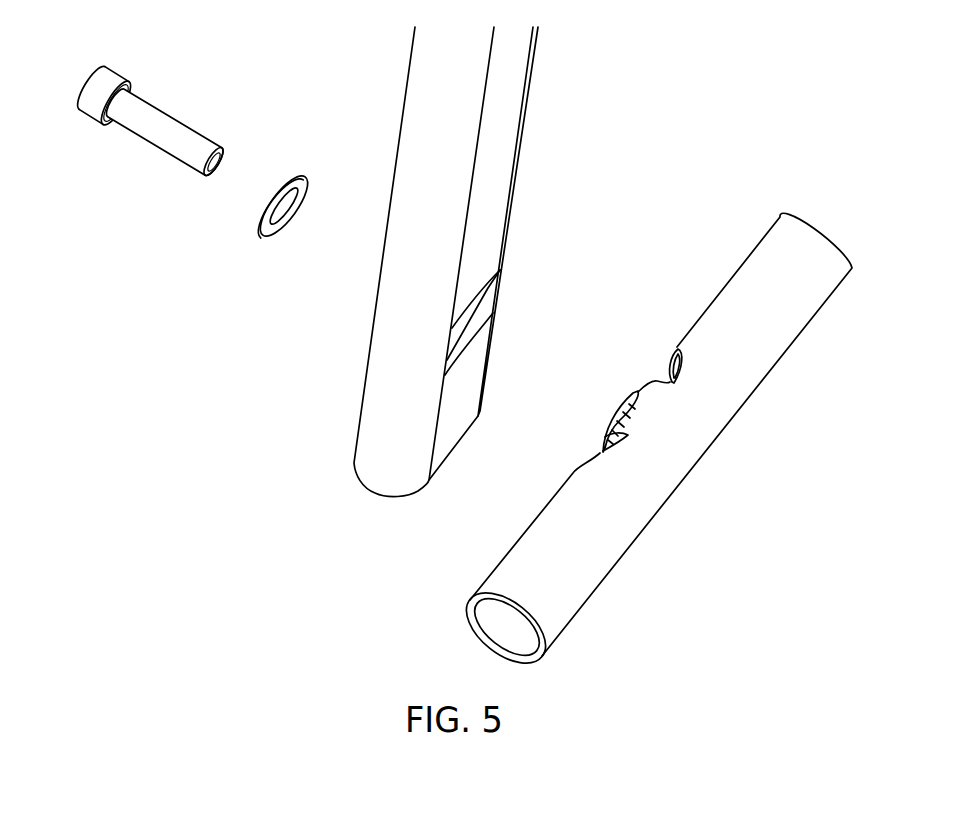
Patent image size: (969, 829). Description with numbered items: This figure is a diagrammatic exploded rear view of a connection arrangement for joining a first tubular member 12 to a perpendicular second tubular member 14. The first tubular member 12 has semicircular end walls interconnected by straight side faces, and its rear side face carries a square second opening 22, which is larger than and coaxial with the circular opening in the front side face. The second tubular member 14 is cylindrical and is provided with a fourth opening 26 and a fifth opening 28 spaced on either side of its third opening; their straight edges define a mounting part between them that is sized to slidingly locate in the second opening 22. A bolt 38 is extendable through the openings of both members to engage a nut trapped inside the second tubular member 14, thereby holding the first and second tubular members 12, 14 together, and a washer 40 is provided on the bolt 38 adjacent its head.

The first tubular member 12 is at (446, 283).
The second tubular member 14 is at (653, 445).
The second opening 22 is at (482, 308).
The fourth opening 26 is at (672, 382).
The fifth opening 28 is at (602, 452).
The bolt 38 is at (165, 135).
The washer 40 is at (268, 237).